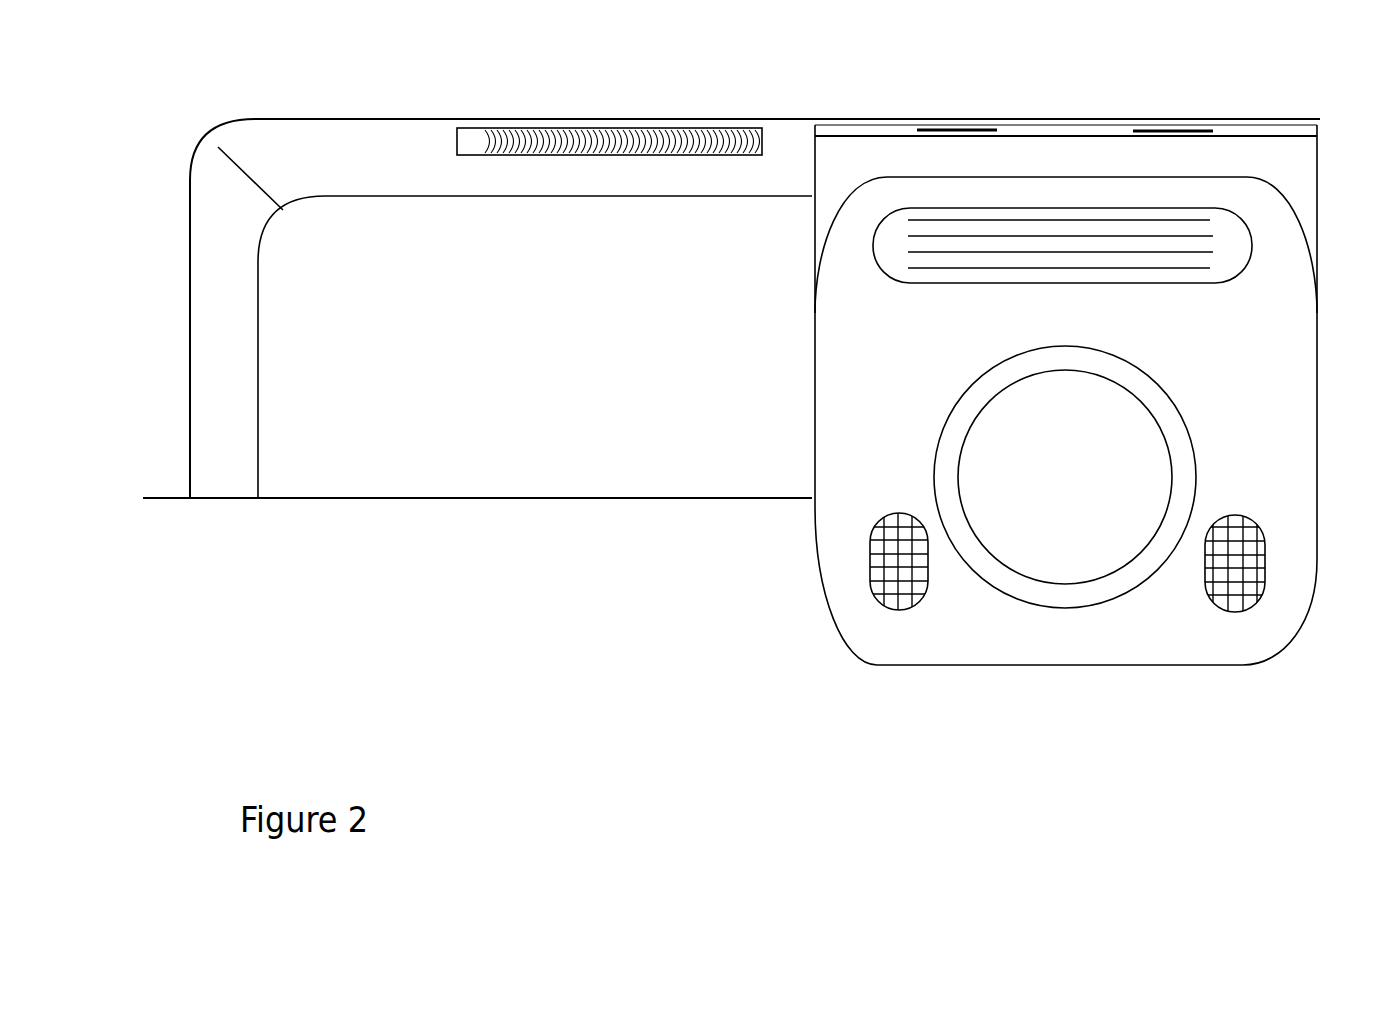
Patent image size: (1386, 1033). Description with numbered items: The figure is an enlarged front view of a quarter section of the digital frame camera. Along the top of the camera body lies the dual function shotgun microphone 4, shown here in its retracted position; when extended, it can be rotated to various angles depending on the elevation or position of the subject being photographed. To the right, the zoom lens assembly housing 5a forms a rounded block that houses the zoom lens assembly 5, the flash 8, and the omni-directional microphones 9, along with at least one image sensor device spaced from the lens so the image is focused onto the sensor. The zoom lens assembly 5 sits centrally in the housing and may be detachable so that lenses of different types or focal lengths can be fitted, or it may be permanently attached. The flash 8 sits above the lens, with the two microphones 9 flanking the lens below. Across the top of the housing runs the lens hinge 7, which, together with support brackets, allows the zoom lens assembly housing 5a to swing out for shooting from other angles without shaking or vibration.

The dual function shotgun microphone 4 is at (577, 179).
The zoom lens assembly 5 is at (1218, 450).
The zoom lens assembly housing 5a is at (862, 425).
The lens hinge 7 is at (858, 100).
The flash 8 is at (1003, 197).
The omni-directional microphones 9 is at (1233, 628).